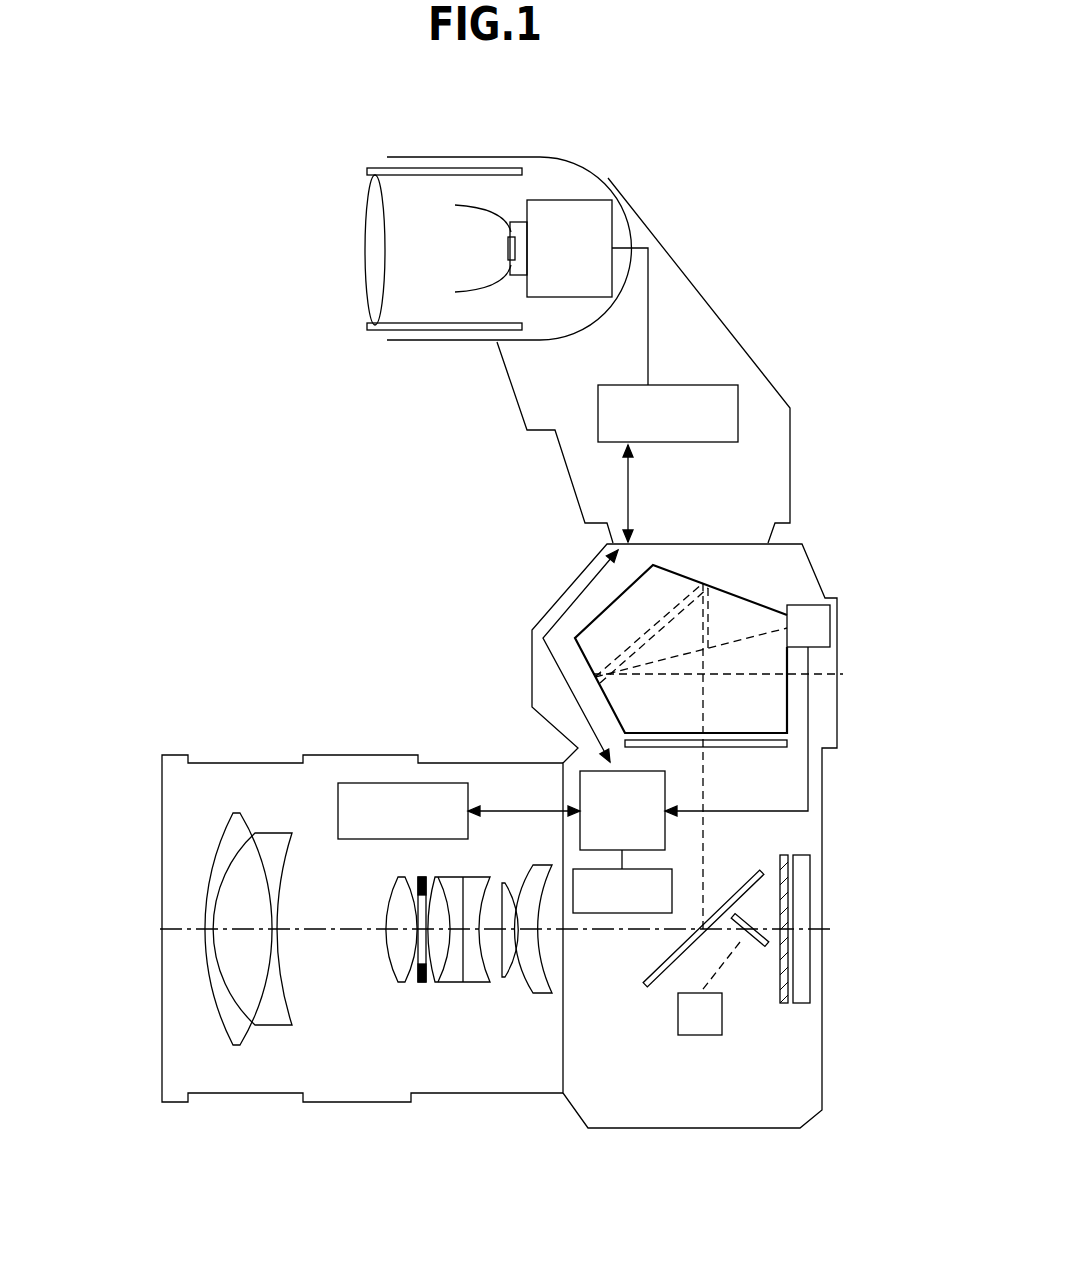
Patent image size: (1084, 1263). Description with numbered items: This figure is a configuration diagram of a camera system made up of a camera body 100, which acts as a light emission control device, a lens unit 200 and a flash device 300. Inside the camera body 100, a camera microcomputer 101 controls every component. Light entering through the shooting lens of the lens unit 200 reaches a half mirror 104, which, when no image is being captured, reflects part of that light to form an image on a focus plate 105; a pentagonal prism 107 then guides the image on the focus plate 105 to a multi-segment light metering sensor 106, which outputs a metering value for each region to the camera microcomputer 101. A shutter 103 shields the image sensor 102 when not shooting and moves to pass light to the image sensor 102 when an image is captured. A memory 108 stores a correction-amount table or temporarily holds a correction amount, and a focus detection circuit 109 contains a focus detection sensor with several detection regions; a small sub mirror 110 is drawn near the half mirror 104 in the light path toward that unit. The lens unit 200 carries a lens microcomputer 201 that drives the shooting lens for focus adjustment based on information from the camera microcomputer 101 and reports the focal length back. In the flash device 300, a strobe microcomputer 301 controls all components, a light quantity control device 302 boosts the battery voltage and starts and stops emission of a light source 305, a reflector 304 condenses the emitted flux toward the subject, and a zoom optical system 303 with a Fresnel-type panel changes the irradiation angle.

The camera body 100 is at (802, 1073).
The camera microcomputer 101 is at (593, 770).
The image sensor 102 is at (803, 923).
The shutter 103 is at (785, 862).
The half mirror 104 is at (762, 870).
The focus plate 105 is at (777, 743).
The light metering sensor 106 is at (832, 627).
The pentagonal prism 107 is at (607, 630).
The memory 108 is at (620, 913).
The focus detection circuit 109 is at (722, 1008).
The sub mirror 110 is at (755, 917).
The lens unit 200 is at (178, 785).
The lens microcomputer 201 is at (405, 783).
The flash device 300 is at (770, 502).
The strobe microcomputer 301 is at (597, 408).
The light quantity control device 302 is at (585, 200).
The zoom optical system 303 is at (373, 287).
The reflector 304 is at (490, 207).
The light source 305 is at (510, 247).